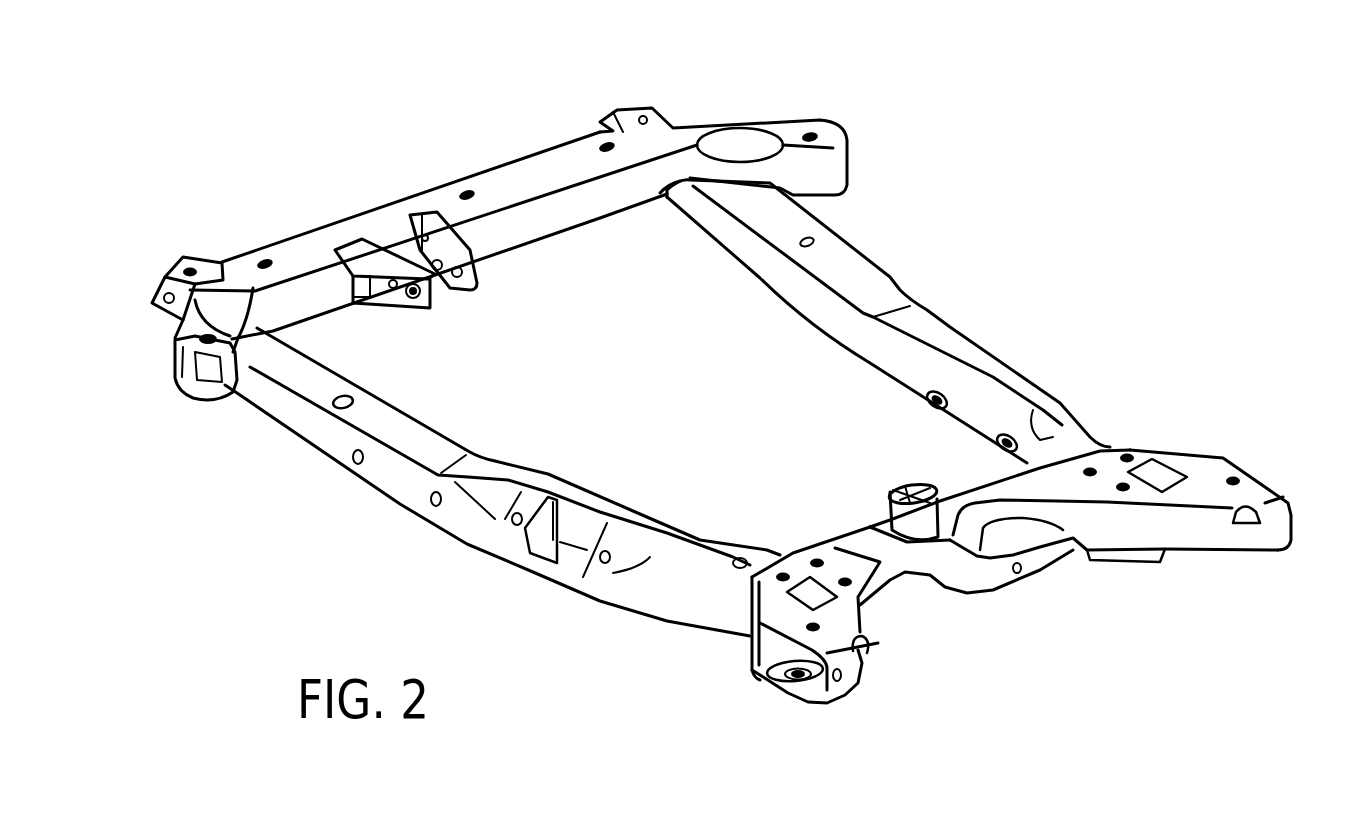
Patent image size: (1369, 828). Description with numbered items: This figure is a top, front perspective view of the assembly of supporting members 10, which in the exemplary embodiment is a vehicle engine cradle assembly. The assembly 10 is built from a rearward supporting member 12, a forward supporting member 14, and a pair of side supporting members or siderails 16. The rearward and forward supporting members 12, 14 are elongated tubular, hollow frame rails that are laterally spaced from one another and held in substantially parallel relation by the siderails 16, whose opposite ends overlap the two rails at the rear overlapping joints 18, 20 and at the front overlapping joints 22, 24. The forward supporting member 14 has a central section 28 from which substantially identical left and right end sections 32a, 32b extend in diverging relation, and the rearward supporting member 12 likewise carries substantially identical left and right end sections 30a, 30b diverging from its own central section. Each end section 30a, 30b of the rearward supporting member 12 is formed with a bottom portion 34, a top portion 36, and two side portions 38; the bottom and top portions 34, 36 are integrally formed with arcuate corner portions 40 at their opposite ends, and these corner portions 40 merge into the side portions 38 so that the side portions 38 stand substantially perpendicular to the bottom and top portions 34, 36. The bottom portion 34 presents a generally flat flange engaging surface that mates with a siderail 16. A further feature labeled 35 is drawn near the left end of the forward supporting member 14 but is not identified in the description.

The assembly of supporting members 10 is at (1054, 233).
The rearward supporting member 12 is at (1274, 462).
The forward supporting member 14 is at (243, 245).
The side supporting members or siderails 16 is at (893, 262).
The rear overlapping joint 18 is at (1109, 421).
The rear overlapping joint 20 is at (806, 539).
The front overlapping joint 22 is at (305, 334).
The front overlapping joint 24 is at (660, 208).
The central section 28 is at (490, 190).
The left end section 30a is at (850, 693).
The right end section 30b is at (1247, 553).
The left end section 32a is at (177, 330).
The right end section 32b is at (793, 130).
The bottom portion 34 is at (815, 692).
The bushing mount 35 is at (215, 392).
The top portion 36 is at (893, 557).
The side portions 38 is at (770, 677).
The arcuate corner portion 40 is at (780, 555).